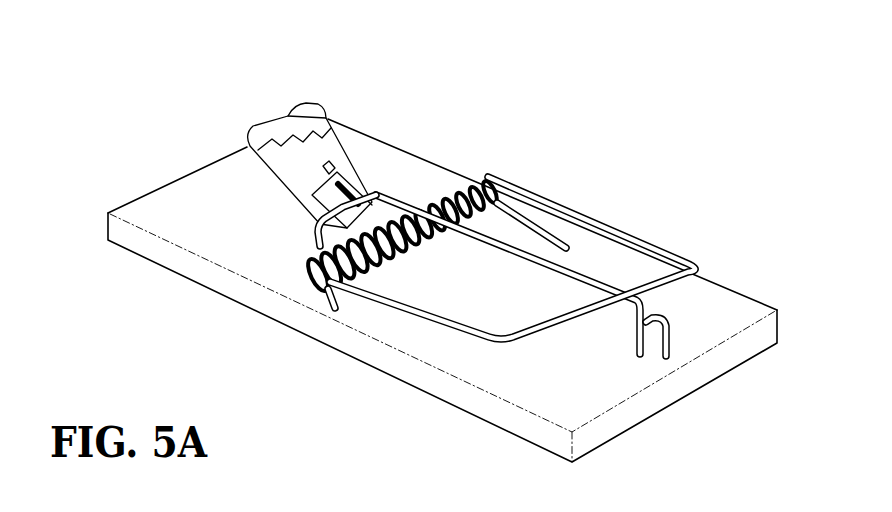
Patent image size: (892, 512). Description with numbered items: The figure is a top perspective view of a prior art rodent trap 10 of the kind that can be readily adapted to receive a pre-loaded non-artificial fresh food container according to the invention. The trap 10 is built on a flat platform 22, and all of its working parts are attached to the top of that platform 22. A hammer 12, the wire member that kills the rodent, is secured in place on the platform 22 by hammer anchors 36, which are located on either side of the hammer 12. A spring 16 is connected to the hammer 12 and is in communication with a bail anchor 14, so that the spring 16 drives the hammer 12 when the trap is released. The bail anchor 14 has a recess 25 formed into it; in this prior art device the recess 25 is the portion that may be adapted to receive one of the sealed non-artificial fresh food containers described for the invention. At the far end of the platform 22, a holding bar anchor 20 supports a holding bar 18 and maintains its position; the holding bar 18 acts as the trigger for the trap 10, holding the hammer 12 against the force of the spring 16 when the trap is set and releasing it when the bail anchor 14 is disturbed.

The rodent trap 10 is at (452, 261).
The hammer 12 is at (658, 240).
The bail anchor 14 is at (317, 157).
The spring 16 is at (433, 187).
The holding bar 18 is at (672, 308).
The holding bar anchor 20 is at (667, 343).
The platform 22 is at (560, 400).
The recess 25 is at (291, 117).
The hammer anchor 36 is at (303, 270).